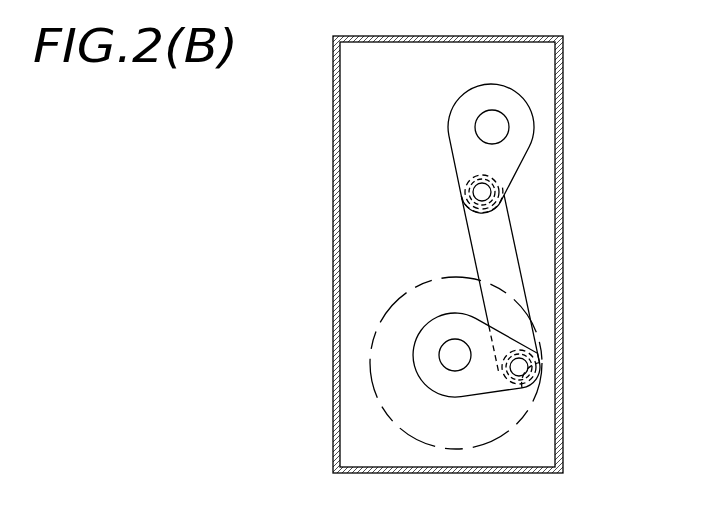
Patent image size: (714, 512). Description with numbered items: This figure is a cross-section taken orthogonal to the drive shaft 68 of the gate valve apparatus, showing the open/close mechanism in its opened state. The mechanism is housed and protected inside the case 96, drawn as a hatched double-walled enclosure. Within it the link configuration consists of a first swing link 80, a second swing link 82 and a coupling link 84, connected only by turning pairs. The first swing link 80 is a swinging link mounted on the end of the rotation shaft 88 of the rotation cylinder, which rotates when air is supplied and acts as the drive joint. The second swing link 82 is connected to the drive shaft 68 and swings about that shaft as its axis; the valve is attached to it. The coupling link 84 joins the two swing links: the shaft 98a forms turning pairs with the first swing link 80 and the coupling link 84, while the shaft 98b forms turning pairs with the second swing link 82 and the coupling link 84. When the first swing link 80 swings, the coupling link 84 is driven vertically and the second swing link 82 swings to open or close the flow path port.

The case 96 is at (334, 118).
The second swing link 82 is at (510, 97).
The drive shaft 68 is at (504, 127).
The coupling link 84 is at (510, 258).
The shaft 98b is at (491, 189).
The shaft 98a is at (528, 367).
The first swing link 80 is at (425, 373).
The rotation shaft 88 is at (447, 351).